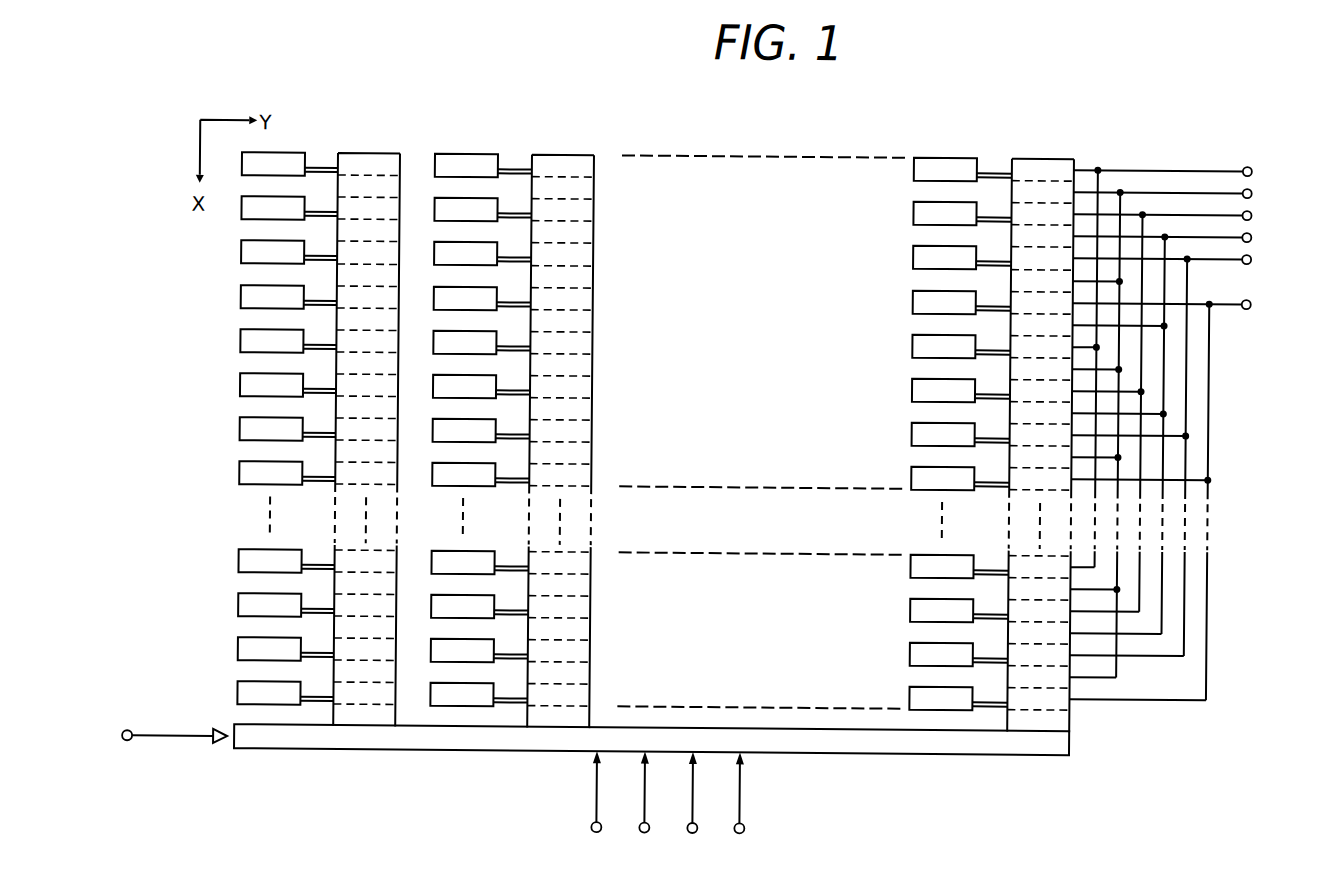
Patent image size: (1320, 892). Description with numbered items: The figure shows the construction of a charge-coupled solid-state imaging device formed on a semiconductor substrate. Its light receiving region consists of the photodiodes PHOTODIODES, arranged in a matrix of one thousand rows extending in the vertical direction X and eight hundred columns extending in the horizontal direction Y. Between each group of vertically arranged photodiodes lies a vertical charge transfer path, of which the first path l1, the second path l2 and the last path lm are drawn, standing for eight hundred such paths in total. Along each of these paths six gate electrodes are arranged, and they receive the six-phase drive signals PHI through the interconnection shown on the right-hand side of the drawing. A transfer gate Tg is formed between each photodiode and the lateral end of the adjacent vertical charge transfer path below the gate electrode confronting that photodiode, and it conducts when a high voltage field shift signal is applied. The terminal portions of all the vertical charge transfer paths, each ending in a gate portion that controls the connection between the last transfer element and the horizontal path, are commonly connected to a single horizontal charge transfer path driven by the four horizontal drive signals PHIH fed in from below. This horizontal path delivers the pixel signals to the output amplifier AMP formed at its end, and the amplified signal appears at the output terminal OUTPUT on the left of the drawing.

The photodiodes PHOTODIODES is at (281, 152).
The transfer gate Tg is at (320, 167).
The vertical charge transfer path l1 is at (370, 147).
The vertical charge transfer path l2 is at (578, 148).
The vertical charge transfer path lm is at (1055, 145).
The six-phase drive signals PHI is at (1177, 430).
The horizontal drive signals PHIH is at (668, 809).
The output amplifier AMP is at (225, 728).
The output terminal OUTPUT is at (137, 736).